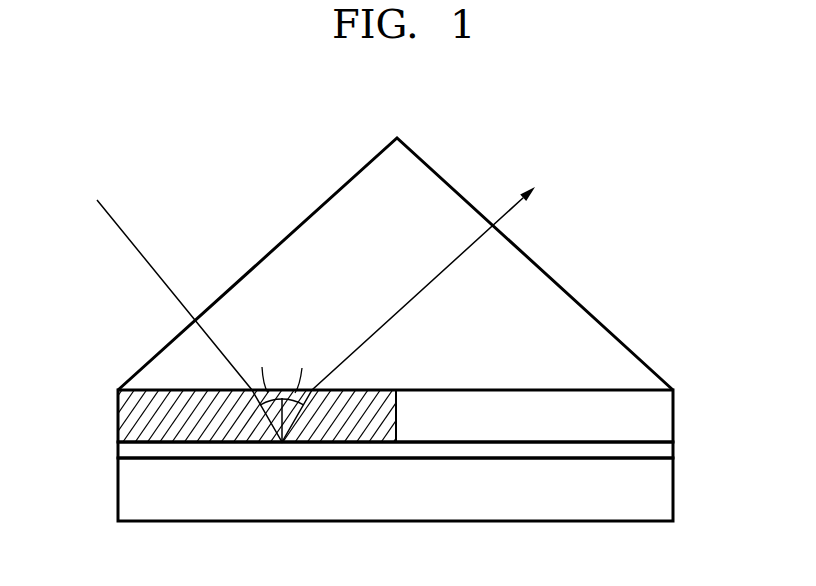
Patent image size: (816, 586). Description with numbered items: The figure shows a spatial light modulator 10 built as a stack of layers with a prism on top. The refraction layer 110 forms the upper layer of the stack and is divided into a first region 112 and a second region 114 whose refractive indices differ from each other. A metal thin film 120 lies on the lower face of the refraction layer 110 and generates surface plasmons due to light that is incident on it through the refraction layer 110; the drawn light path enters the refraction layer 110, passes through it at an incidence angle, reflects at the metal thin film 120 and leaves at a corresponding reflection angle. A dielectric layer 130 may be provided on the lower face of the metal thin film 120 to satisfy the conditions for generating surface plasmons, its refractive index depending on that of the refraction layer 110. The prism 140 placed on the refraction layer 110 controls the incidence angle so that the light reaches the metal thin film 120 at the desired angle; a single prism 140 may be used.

The spatial light modulator 10 is at (170, 178).
The refraction layer 110 is at (414, 478).
The first region 112 is at (262, 428).
The second region 114 is at (535, 433).
The metal thin film 120 is at (668, 452).
The dielectric layer 130 is at (668, 497).
The prism 140 is at (617, 355).